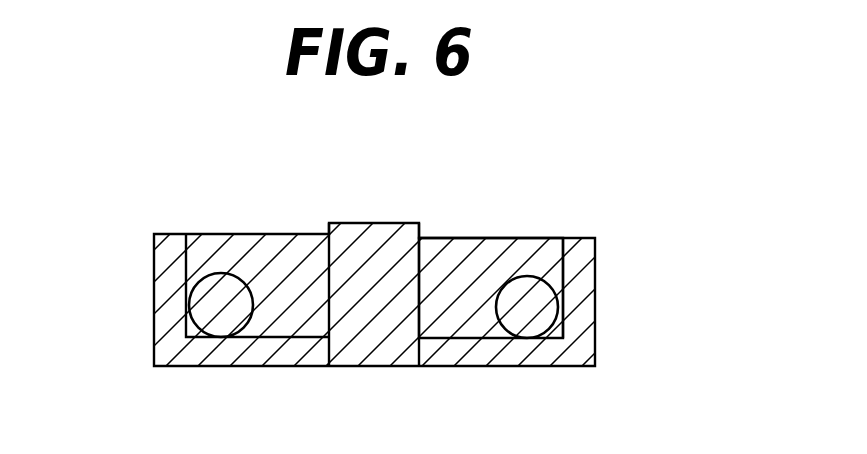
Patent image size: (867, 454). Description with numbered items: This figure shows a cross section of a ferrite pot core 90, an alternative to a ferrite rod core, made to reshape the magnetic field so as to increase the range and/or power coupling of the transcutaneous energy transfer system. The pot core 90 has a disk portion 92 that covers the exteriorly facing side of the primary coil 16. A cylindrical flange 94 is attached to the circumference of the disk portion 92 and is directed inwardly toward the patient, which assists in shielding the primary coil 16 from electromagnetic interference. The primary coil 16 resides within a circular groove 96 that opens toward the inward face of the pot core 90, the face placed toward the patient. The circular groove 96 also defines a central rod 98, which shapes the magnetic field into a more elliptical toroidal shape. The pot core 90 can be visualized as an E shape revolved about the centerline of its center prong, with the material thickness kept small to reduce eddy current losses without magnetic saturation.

The ferrite pot core 90 is at (143, 333).
The disk portion 92 is at (480, 378).
The cylindrical flange 94 is at (606, 311).
The circular groove 96 is at (453, 274).
The central rod 98 is at (367, 223).
The primary coil 16 is at (531, 274).